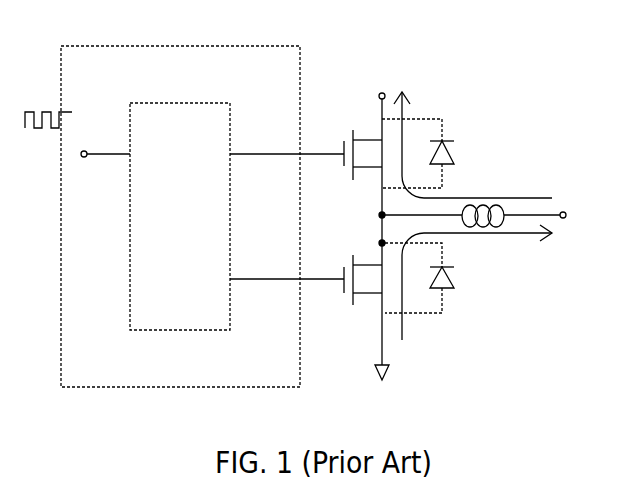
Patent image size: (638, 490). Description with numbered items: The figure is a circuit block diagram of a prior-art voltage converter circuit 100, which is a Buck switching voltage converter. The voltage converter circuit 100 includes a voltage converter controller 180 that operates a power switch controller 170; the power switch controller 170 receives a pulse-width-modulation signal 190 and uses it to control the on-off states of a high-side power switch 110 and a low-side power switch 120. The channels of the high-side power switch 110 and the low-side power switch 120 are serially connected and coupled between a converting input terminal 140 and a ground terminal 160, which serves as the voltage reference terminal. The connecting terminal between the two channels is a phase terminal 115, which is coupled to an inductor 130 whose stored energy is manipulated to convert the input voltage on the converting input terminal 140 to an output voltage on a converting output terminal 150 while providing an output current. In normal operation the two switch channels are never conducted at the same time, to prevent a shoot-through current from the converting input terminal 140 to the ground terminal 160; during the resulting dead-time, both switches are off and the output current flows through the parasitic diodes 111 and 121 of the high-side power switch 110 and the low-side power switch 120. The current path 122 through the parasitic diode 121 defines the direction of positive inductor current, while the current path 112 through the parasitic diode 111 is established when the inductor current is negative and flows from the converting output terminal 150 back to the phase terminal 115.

The voltage converter circuit 100 is at (550, 60).
The voltage converter controller 180 is at (256, 75).
The power switch controller 170 is at (166, 247).
The pulse-width-modulation signal 190 is at (84, 158).
The converting input terminal 140 is at (382, 92).
The high-side power switch 110 is at (356, 130).
The parasitic diode 111 is at (455, 150).
The current path 112 is at (523, 196).
The phase terminal 115 is at (378, 215).
The inductor 130 is at (485, 230).
The converting output terminal 150 is at (568, 216).
The current path 122 is at (527, 241).
The low-side power switch 120 is at (359, 305).
The parasitic diode 121 is at (451, 292).
The ground terminal 160 is at (390, 371).